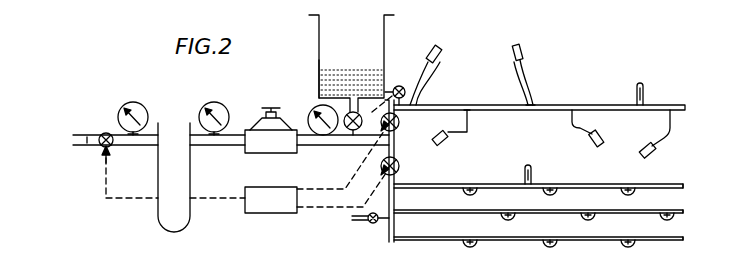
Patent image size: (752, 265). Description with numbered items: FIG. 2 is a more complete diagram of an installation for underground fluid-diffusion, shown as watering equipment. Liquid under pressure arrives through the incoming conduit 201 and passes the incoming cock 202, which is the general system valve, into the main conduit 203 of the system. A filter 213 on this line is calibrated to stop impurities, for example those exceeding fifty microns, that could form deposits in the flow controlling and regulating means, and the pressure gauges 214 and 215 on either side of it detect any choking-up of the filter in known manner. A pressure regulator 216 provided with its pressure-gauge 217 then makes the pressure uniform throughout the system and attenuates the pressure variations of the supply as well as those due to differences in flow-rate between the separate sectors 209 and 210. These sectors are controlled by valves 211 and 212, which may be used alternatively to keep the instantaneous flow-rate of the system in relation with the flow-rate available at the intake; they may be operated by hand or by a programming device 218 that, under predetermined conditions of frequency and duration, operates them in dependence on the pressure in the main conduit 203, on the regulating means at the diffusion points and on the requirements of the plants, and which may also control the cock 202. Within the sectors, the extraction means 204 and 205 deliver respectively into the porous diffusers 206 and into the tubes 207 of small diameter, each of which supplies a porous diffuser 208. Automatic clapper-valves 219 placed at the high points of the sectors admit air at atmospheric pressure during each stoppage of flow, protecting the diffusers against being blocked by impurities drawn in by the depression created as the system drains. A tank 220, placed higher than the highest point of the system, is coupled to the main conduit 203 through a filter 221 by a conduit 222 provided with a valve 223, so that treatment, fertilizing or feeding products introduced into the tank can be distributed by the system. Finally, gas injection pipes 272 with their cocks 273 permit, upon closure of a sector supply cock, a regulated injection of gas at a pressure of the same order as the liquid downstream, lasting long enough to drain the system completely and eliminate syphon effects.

The incoming conduit 201 is at (91, 155).
The incoming cock 202 is at (104, 132).
The main conduit 203 is at (313, 146).
The extraction means 204 is at (470, 184).
The extraction means 205 is at (530, 98).
The porous diffuser 206 is at (472, 246).
The tube of small diameter 207 is at (530, 80).
The porous diffuser 208 is at (514, 52).
The separate sector 209 is at (680, 185).
The separate sector 210 is at (655, 105).
The valve 211 is at (399, 170).
The valve 212 is at (399, 125).
The filter 213 is at (178, 186).
The pressure gauge 214 is at (156, 91).
The pressure gauge 215 is at (214, 103).
The pressure regulator 216 is at (266, 153).
The pressure-gauge 217 is at (307, 114).
The programming device 218 is at (271, 200).
The automatic clapper-valve 219 is at (637, 92).
The tank 220 is at (384, 44).
The filter 221 is at (399, 86).
The conduit 222 is at (318, 86).
The valve 223 is at (353, 131).
The gas injection pipe 272 is at (440, 50).
The cock 273 is at (433, 46).